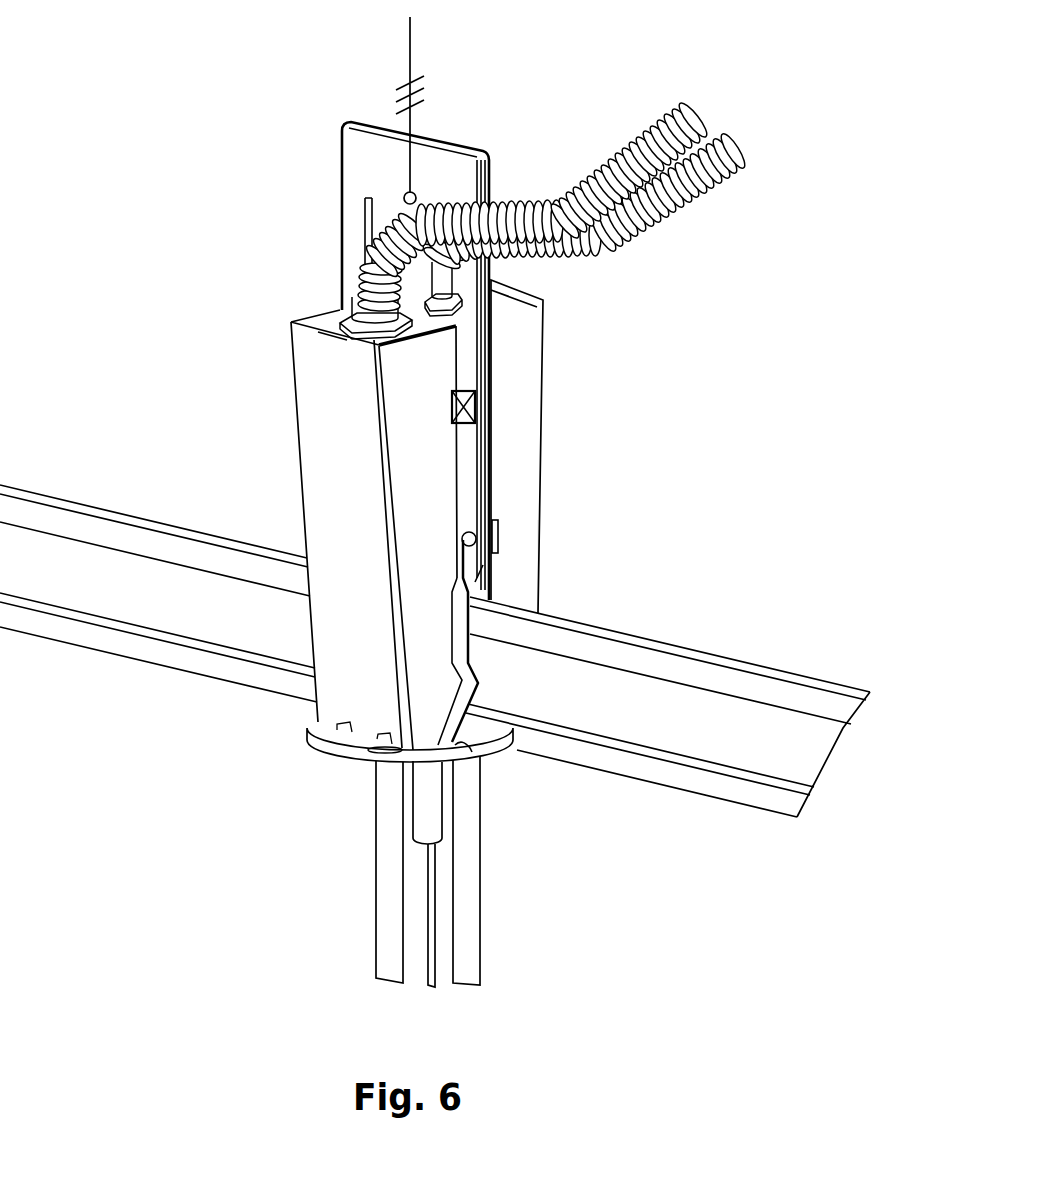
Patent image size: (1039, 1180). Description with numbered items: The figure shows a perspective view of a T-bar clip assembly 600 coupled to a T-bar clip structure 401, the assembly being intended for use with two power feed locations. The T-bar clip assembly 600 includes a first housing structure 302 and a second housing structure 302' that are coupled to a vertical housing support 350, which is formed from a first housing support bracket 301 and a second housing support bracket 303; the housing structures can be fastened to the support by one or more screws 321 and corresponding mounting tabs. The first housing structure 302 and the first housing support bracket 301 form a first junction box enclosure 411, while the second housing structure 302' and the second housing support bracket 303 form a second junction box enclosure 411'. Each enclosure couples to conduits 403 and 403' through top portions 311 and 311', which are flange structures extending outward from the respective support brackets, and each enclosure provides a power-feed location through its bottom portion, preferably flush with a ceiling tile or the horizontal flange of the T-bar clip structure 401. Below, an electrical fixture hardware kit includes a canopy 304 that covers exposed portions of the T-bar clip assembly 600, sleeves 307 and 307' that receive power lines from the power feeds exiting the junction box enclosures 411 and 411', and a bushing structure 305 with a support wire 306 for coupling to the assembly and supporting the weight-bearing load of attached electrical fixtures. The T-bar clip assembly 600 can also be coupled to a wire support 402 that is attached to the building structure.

The T-bar clip assembly 600 is at (141, 145).
The wire support 402 is at (410, 45).
The conduit 403 is at (534, 198).
The conduit 403' is at (584, 203).
The first housing support bracket 301 is at (357, 152).
The second housing support bracket 303 is at (482, 156).
The top portion 311 is at (338, 301).
The top portion 311' is at (529, 289).
The first housing structure 302 is at (335, 530).
The second housing structure 302' is at (559, 446).
The screw 321 is at (487, 421).
The first junction box enclosure 411 is at (346, 535).
The second junction box enclosure 411' is at (522, 524).
The vertical housing support 350 is at (470, 478).
The T-bar clip structure 401 is at (745, 683).
The canopy 304 is at (318, 750).
The bushing structure 305 is at (430, 830).
The support wire 306 is at (432, 990).
The sleeve 307 is at (350, 872).
The sleeve 307' is at (518, 870).